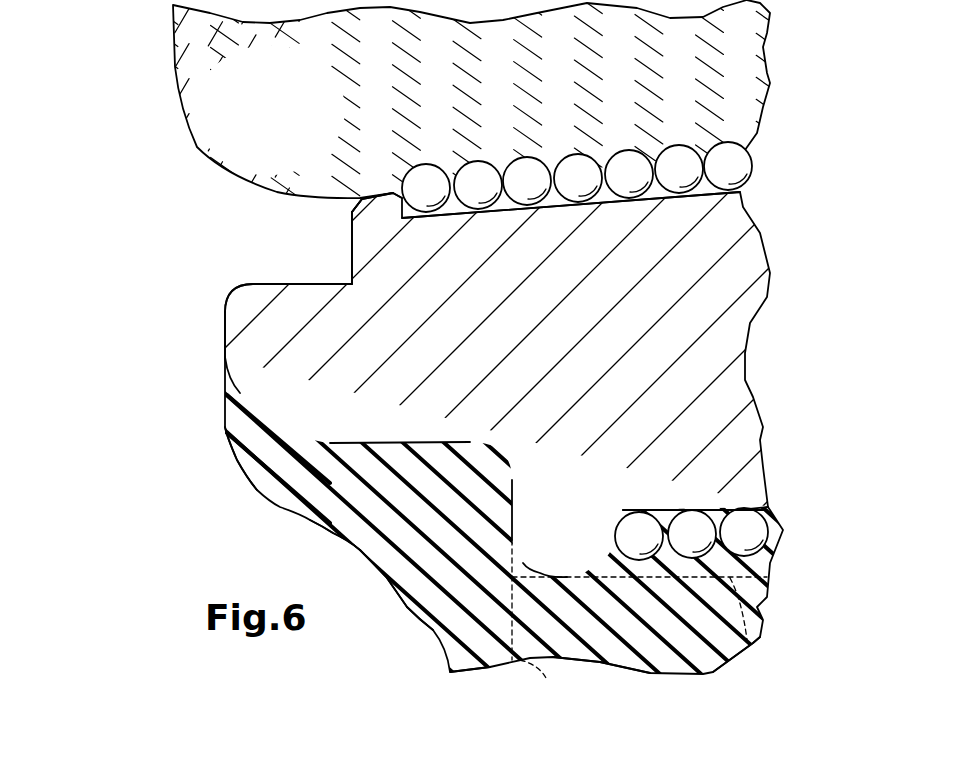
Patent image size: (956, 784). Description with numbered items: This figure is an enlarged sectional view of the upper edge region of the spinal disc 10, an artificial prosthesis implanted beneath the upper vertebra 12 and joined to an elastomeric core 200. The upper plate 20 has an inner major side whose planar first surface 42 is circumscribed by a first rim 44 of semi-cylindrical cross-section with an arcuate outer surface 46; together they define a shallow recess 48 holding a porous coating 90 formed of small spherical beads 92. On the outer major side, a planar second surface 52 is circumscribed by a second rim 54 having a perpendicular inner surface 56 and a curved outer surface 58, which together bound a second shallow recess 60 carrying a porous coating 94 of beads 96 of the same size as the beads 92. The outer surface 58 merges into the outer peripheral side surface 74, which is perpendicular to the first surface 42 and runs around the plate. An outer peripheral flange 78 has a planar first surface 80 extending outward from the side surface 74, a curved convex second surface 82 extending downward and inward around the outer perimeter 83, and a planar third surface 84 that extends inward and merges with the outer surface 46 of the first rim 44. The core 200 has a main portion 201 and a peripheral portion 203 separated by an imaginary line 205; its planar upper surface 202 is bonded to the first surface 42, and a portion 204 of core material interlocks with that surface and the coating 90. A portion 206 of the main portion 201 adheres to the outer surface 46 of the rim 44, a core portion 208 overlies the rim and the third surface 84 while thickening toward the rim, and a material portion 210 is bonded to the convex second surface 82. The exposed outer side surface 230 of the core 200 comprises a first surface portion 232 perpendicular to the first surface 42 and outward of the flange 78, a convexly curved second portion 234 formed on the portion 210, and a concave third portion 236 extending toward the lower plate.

The spinal disc 10 is at (138, 232).
The upper vertebra 12 is at (178, 132).
The upper plate 20 is at (214, 332).
The first surface 42 is at (667, 557).
The first rim 44 is at (534, 586).
The outer surface 46 is at (512, 550).
The recess 48 is at (743, 637).
The second surface 52 is at (727, 157).
The second rim 54 is at (383, 199).
The inner surface 56 is at (437, 198).
The outer surface 58 is at (352, 210).
The recess 60 is at (677, 157).
The outer peripheral side surface 74 is at (352, 246).
The outer peripheral flange 78 is at (216, 312).
The first surface 80 is at (260, 284).
The second surface 82 is at (223, 388).
The outer perimeter 83 is at (204, 270).
The third surface 84 is at (390, 443).
The porous coating 90 is at (684, 575).
The beads 92 is at (747, 543).
The porous coating 94 is at (602, 140).
The beads 96 is at (528, 180).
The elastomeric core 200 is at (257, 506).
The main portion 201 is at (600, 650).
The upper surface 202 is at (670, 510).
The peripheral portion 203 is at (477, 645).
The portion 204 is at (757, 507).
The imaginary line 205 is at (543, 685).
The portion 206 is at (470, 600).
The core portion 208 is at (357, 455).
The material portion 210 is at (237, 422).
The outer side surface 230 is at (396, 583).
The first surface portion 232 is at (223, 405).
The second portion 234 is at (242, 475).
The third portion 236 is at (363, 547).